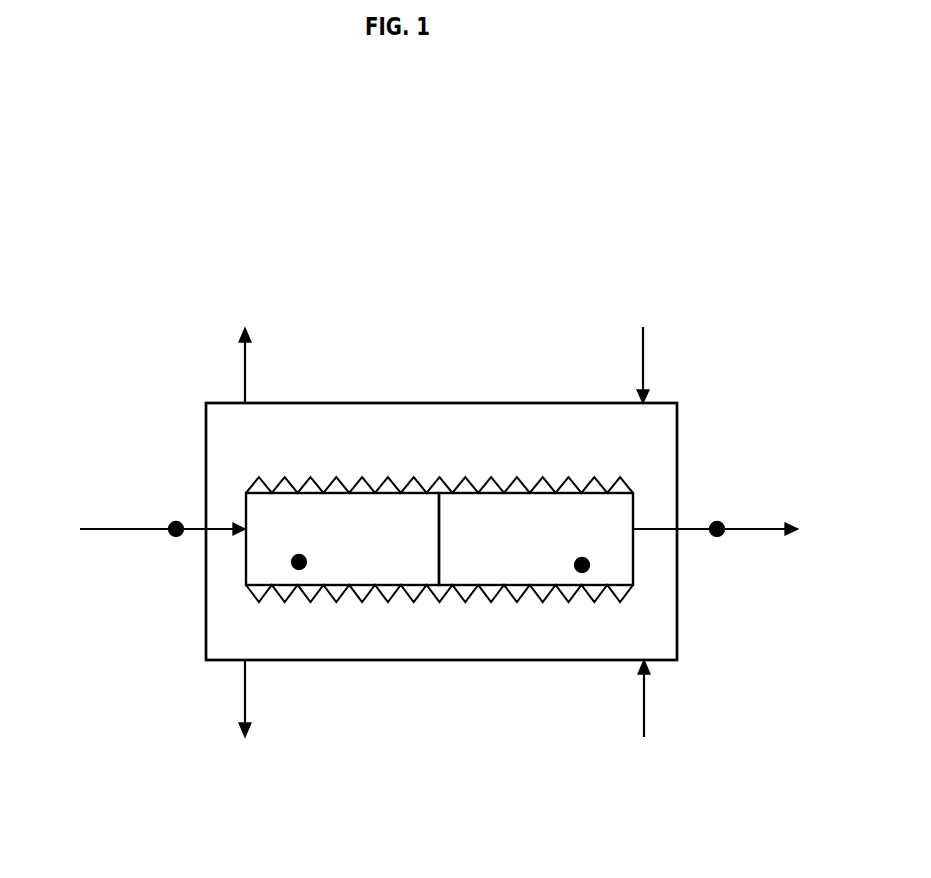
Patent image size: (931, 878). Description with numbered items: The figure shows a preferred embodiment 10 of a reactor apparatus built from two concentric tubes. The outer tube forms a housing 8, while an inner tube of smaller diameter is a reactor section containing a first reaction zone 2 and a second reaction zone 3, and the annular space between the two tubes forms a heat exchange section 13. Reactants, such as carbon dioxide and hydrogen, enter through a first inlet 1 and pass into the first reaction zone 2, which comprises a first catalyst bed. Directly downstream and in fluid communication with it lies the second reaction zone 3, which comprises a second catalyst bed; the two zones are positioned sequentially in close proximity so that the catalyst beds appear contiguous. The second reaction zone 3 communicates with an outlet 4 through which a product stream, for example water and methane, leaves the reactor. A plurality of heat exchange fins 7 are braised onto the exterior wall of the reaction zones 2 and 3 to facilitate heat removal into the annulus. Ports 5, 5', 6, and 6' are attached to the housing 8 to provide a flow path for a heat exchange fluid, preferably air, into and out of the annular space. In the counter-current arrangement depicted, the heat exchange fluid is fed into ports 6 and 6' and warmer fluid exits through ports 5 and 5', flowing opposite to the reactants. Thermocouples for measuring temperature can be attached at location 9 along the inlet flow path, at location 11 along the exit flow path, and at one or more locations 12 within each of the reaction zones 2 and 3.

The first inlet 1 is at (129, 528).
The first reaction zone 2 is at (342, 539).
The second reaction zone 3 is at (536, 539).
The outlet 4 is at (763, 530).
The port 5 is at (224, 357).
The port 5' is at (222, 699).
The port 6 is at (662, 357).
The port 6' is at (667, 709).
The heat exchange fins 7 is at (318, 478).
The housing 8 is at (543, 403).
The thermocouple location 9 is at (172, 535).
The apparatus 10 is at (298, 280).
The thermocouple location 11 is at (713, 537).
The thermocouple locations 12 is at (295, 570).
The heat exchange section 13 is at (442, 441).